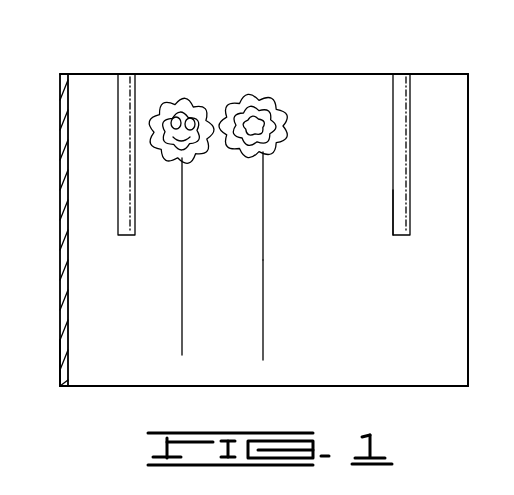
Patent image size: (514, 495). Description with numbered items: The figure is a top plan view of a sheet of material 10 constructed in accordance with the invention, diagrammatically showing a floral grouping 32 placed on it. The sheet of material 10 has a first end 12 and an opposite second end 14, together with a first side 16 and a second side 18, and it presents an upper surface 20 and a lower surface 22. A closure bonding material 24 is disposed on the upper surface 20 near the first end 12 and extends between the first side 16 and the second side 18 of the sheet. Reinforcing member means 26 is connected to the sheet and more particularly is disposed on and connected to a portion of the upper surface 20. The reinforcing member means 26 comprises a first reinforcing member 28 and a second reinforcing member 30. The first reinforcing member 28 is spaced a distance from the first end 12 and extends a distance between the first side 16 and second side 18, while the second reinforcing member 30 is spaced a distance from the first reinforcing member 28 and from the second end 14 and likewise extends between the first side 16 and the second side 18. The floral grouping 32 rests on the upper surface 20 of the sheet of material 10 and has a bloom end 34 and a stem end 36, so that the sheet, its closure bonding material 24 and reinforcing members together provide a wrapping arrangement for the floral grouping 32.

The sheet of material 10 is at (232, 73).
The first end 12 is at (62, 238).
The second end 14 is at (469, 180).
The first side 16 is at (348, 73).
The second side 18 is at (408, 387).
The upper surface 20 is at (450, 350).
The lower surface 22 is at (510, 277).
The closure bonding material 24 is at (66, 355).
The reinforcing member means 26 is at (411, 99).
The first reinforcing member 28 is at (137, 180).
The second reinforcing member 30 is at (395, 190).
The floral grouping 32 is at (270, 210).
The bloom end 34 is at (291, 131).
The stem end 36 is at (268, 338).